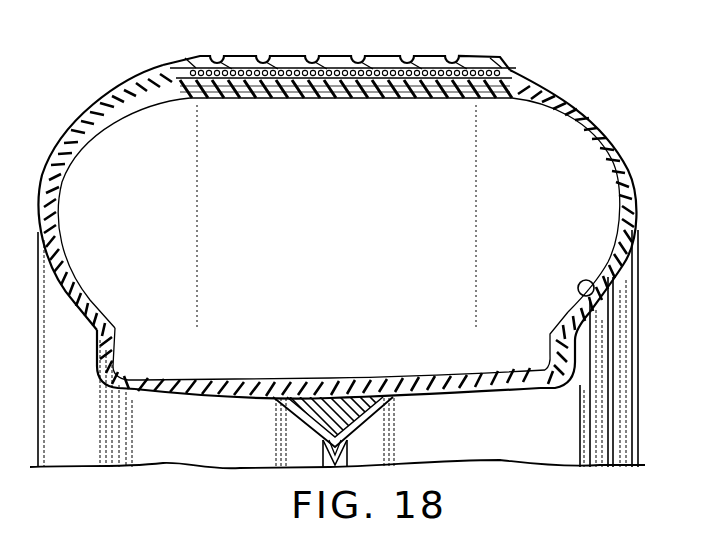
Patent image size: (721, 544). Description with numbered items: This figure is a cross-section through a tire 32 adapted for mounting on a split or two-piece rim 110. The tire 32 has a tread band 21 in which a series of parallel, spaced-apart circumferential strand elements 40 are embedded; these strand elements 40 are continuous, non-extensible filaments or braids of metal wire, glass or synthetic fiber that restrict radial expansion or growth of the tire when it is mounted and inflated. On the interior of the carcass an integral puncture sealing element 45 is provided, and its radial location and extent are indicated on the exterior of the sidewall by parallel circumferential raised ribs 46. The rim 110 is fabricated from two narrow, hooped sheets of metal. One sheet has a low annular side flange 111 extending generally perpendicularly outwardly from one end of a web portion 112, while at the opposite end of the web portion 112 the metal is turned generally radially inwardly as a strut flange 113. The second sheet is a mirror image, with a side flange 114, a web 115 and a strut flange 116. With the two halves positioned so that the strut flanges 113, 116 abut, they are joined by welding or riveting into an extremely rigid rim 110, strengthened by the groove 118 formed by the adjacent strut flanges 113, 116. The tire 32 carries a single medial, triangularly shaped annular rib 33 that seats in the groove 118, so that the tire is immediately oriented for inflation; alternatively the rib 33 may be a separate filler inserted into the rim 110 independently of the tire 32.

The tread band 21 is at (421, 57).
The strand elements 40 is at (257, 72).
The tire 32 is at (46, 142).
The puncture sealing element 45 is at (580, 281).
The raised ribs 46 is at (592, 360).
The side flange 114 is at (557, 334).
The web 115 is at (468, 373).
The web portion 112 is at (184, 374).
The side flange 111 is at (115, 333).
The rib 33 is at (322, 396).
The groove 118 is at (352, 423).
The strut flange 116 is at (345, 458).
The strut flange 113 is at (322, 460).
The rim 110 is at (162, 464).